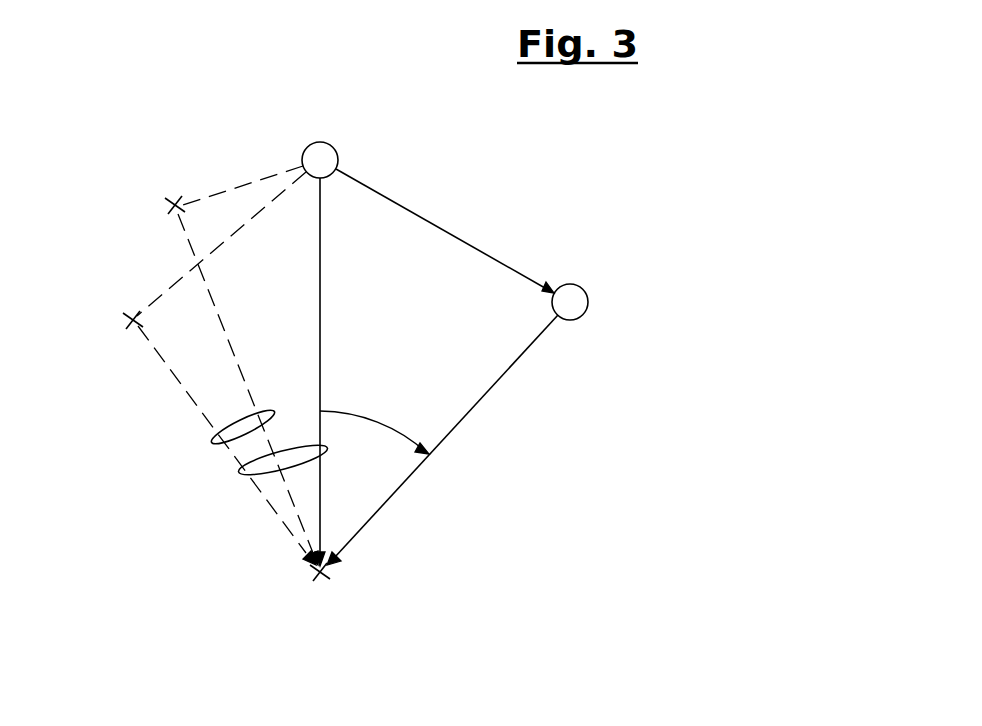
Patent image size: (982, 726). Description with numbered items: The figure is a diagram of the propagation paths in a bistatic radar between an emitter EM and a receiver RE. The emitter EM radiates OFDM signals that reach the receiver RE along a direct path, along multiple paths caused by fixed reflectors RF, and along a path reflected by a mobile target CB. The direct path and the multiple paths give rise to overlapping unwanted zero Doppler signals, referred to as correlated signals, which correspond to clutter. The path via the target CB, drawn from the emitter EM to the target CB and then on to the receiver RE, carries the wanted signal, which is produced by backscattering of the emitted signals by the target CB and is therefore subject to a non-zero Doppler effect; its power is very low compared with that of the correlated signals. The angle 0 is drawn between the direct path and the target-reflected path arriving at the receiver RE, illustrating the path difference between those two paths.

The emitter EM is at (326, 162).
The mobile target CB is at (574, 318).
The fixed reflector RF is at (173, 202).
The receiver RE is at (320, 582).
The angle between direct path and secondary path 0 is at (374, 422).
The element direct path is at (320, 296).
The element multiple paths is at (212, 441).